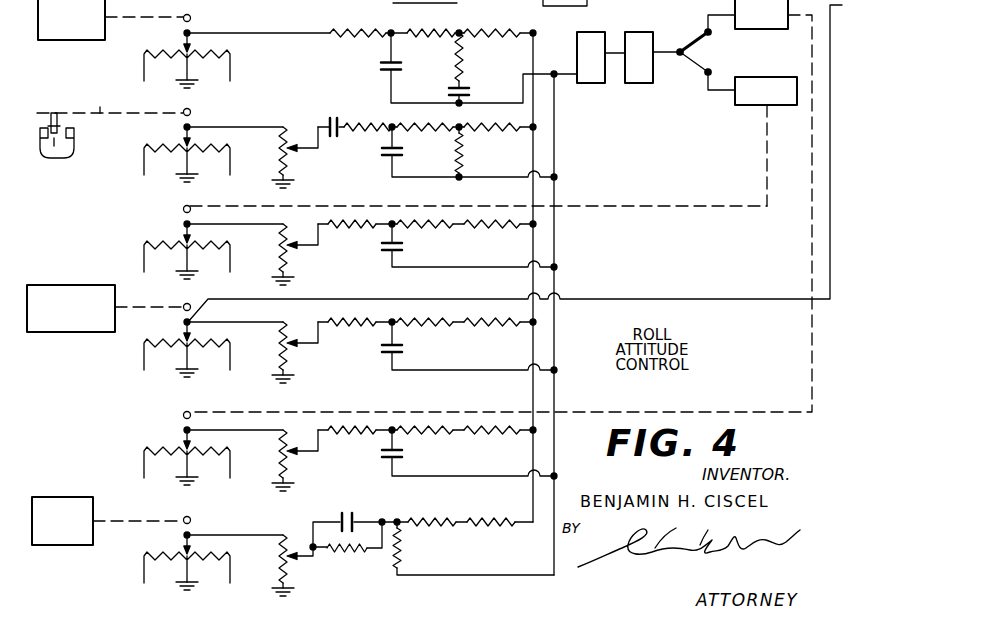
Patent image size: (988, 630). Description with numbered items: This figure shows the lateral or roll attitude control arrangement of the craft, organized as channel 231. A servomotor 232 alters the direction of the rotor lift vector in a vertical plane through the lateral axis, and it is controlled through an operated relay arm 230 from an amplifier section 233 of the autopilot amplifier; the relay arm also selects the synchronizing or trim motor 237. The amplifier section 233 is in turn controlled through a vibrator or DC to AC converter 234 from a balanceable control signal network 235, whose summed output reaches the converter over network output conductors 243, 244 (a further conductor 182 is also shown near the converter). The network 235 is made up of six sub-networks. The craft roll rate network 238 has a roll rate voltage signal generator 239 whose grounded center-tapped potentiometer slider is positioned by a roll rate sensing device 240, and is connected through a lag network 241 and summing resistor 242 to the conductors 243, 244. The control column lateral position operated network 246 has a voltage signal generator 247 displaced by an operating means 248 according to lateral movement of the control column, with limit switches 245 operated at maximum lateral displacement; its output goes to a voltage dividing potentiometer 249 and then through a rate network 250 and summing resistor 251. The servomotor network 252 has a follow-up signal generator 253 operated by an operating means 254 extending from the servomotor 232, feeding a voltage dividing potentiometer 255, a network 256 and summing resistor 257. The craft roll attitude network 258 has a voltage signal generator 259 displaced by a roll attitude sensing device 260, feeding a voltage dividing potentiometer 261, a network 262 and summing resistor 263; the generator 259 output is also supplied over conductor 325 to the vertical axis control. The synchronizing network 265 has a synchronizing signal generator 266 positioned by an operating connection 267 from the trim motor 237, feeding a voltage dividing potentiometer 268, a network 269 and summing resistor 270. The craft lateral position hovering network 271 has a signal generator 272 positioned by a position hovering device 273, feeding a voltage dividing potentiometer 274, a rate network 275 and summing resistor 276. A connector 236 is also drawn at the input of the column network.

The conductor 182 is at (533, 0).
The relay arm 230 is at (678, 43).
The channel 231 is at (670, 180).
The servomotor 232 is at (742, 106).
The amplifier section 233 is at (640, 84).
The vibrator 234 is at (595, 84).
The balanceable control signal network 235 is at (66, 200).
The connector 236 is at (39, 115).
The synchronizing or trim motor 237 is at (750, 30).
The craft roll rate network 238 is at (291, 55).
The craft roll rate voltage signal generator 239 is at (176, 45).
The craft roll rate sensing device 240 is at (60, 40).
The lag network 241 is at (513, 85).
The summing resistor 242 is at (483, 42).
The network output conductor 243 is at (536, 58).
The network output conductor 244 is at (555, 146).
The limit switch 245 is at (73, 152).
The control column lateral position operated network 246 is at (304, 105).
The voltage signal generator 247 is at (168, 136).
The operating means 248 is at (110, 101).
The voltage dividing potentiometer 249 is at (300, 160).
The rate network 250 is at (443, 156).
The summing resistor 251 is at (466, 151).
The servomotor network 252 is at (368, 268).
The follow-up signal generator 253 is at (173, 232).
The operating means 254 is at (331, 206).
The voltage dividing potentiometer 255 is at (296, 262).
The network 256 is at (443, 253).
The summing resistor 257 is at (480, 228).
The craft roll attitude network 258 is at (313, 320).
The voltage signal generator 259 is at (180, 336).
The roll attitude sensing device 260 is at (70, 332).
The voltage dividing potentiometer 261 is at (305, 353).
The network 262 is at (450, 351).
The summing resistor 263 is at (494, 322).
The synchronizing network 265 is at (110, 438).
The synchronizing signal generator 266 is at (180, 442).
The operating connection 267 is at (362, 413).
The voltage dividing potentiometer 268 is at (308, 463).
The network 269 is at (453, 463).
The summing resistor 270 is at (496, 433).
The craft lateral position hovering network 271 is at (293, 526).
The signal generator 272 is at (175, 548).
The position hovering device 273 is at (58, 546).
The voltage dividing potentiometer 274 is at (299, 568).
The rate network 275 is at (453, 556).
The summing resistor 276 is at (502, 526).
The conductor 325 is at (727, 299).